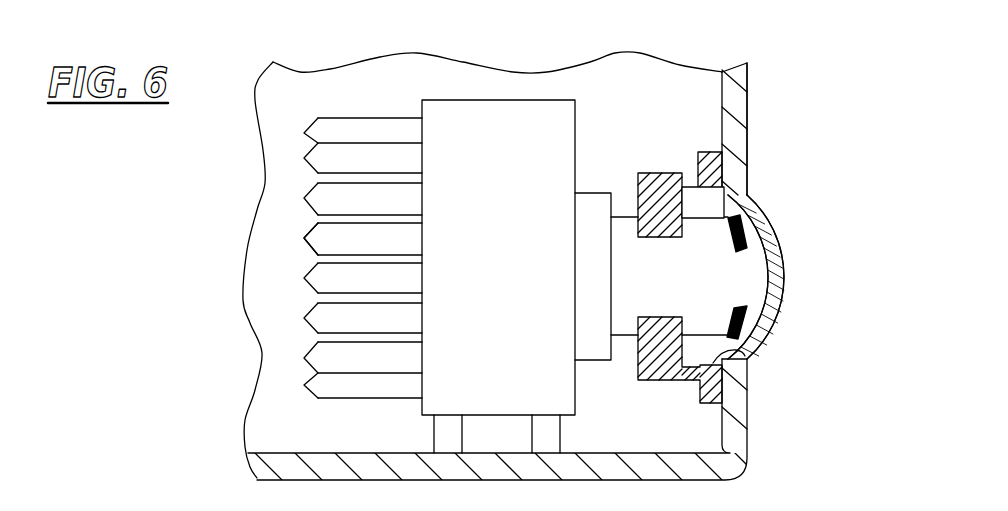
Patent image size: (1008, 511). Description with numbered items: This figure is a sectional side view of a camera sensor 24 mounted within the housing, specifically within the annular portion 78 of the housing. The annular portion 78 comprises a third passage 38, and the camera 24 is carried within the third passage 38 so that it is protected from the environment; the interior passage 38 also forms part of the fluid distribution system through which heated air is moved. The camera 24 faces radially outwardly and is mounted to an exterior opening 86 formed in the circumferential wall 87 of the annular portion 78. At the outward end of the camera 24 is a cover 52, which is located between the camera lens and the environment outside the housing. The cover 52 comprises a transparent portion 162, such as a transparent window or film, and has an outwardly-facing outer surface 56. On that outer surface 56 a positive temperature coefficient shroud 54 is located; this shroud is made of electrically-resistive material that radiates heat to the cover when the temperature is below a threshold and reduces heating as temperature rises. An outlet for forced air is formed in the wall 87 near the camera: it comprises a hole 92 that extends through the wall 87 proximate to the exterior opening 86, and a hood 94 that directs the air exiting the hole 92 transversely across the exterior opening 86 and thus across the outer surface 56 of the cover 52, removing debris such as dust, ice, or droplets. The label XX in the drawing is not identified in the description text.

The camera sensor 24 is at (443, 86).
The third passage 38 is at (360, 97).
The cover 52 is at (745, 259).
The positive temperature coefficient shroud 54 is at (750, 227).
The outer surface 56 is at (745, 269).
The annular portion 78 is at (756, 106).
The exterior opening 86 is at (733, 198).
The circumferential wall 87 is at (748, 88).
The hole 92 is at (745, 355).
The hood 94 is at (787, 295).
The transparent portion 162 is at (735, 288).
The fin XX is at (311, 230).